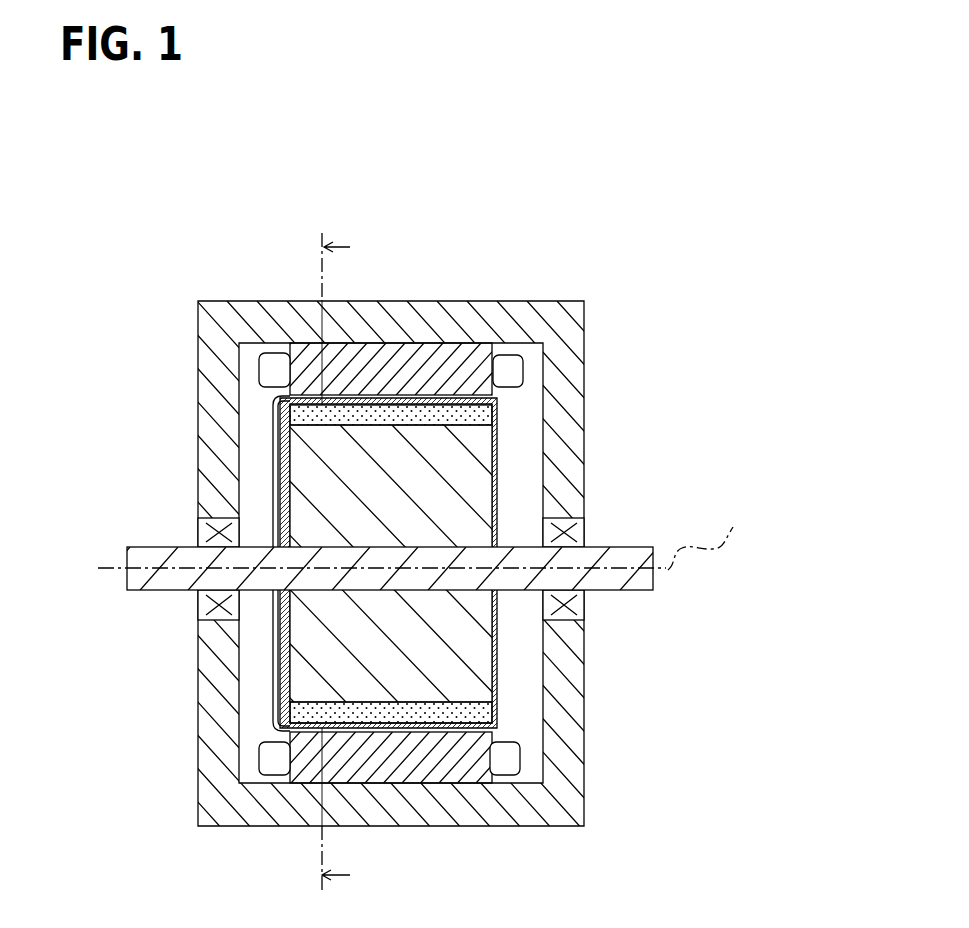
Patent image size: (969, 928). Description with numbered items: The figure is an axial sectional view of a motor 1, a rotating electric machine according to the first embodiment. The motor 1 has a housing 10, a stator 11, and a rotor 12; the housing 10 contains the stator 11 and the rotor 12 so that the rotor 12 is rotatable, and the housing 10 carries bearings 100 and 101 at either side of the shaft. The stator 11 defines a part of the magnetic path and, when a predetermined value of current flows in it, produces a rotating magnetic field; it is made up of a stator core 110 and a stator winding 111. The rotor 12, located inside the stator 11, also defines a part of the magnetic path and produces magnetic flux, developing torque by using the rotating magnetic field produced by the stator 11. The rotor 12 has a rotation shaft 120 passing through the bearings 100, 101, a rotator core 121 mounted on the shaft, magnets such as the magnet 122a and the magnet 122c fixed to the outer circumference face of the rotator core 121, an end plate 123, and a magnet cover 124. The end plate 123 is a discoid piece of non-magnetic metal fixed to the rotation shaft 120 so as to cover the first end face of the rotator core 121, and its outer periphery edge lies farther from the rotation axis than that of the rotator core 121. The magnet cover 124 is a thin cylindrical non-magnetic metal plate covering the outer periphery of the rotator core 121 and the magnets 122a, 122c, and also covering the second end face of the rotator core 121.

The motor 1 is at (484, 543).
The housing 10 is at (223, 320).
The bearing 100 is at (205, 532).
The bearing 101 is at (572, 533).
The stator 11 is at (450, 514).
The stator core 110 is at (440, 366).
The stator winding 111 is at (510, 370).
The rotor 12 is at (369, 646).
The rotation shaft 120 is at (630, 588).
The rotator core 121 is at (470, 658).
The magnet 122a is at (483, 416).
The magnet 122c is at (453, 712).
The end plate 123 is at (283, 660).
The magnet cover 124 is at (405, 731).